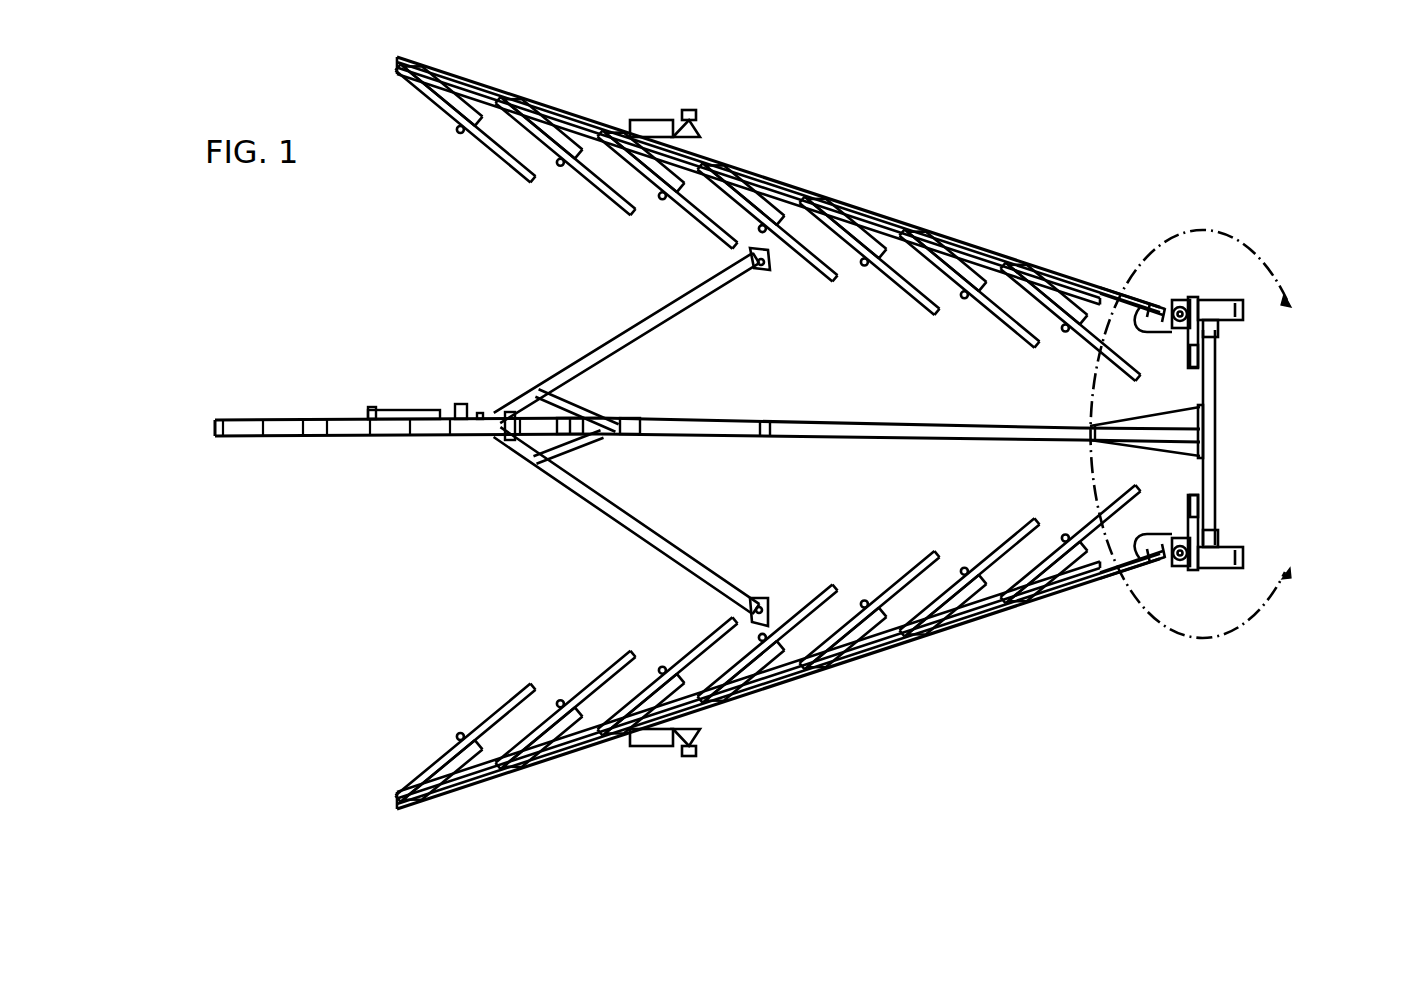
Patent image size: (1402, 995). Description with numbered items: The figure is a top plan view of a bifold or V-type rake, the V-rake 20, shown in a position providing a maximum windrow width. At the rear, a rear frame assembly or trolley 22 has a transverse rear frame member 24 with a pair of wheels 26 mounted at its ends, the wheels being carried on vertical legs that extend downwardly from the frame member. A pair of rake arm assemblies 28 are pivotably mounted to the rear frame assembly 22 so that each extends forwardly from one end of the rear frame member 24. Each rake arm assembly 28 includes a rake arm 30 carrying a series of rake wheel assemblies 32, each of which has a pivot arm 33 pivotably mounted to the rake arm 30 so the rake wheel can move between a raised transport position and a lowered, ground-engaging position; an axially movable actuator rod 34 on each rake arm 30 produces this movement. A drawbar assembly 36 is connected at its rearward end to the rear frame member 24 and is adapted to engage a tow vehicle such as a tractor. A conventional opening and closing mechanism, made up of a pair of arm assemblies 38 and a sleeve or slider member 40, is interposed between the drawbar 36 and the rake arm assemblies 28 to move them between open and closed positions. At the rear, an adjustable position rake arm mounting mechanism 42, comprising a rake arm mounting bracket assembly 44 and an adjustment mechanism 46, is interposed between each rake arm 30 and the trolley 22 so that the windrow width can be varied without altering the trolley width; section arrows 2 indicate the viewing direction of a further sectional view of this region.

The section line 2- 2 is at (1199, 434).
The V-rake 20 is at (430, 279).
The rear frame assembly 22 is at (1170, 436).
The transverse rear frame member 24 is at (1218, 468).
The wheels 26 is at (1213, 298).
The rake arm assembly 28 is at (780, 435).
The rake arm 30 is at (815, 187).
The rake wheel assembly 32 is at (903, 290).
The pivot arm 33 is at (560, 137).
The actuator rod 34 is at (985, 262).
The drawbar assembly 36 is at (460, 463).
The arm assemblies 38 is at (673, 306).
The sleeve or slider member 40 is at (628, 419).
The adjustable position rake arm mounting mechanism 42 is at (1150, 348).
The rake arm mounting bracket assembly 44 is at (1140, 328).
The adjustment mechanism 46 is at (1195, 355).